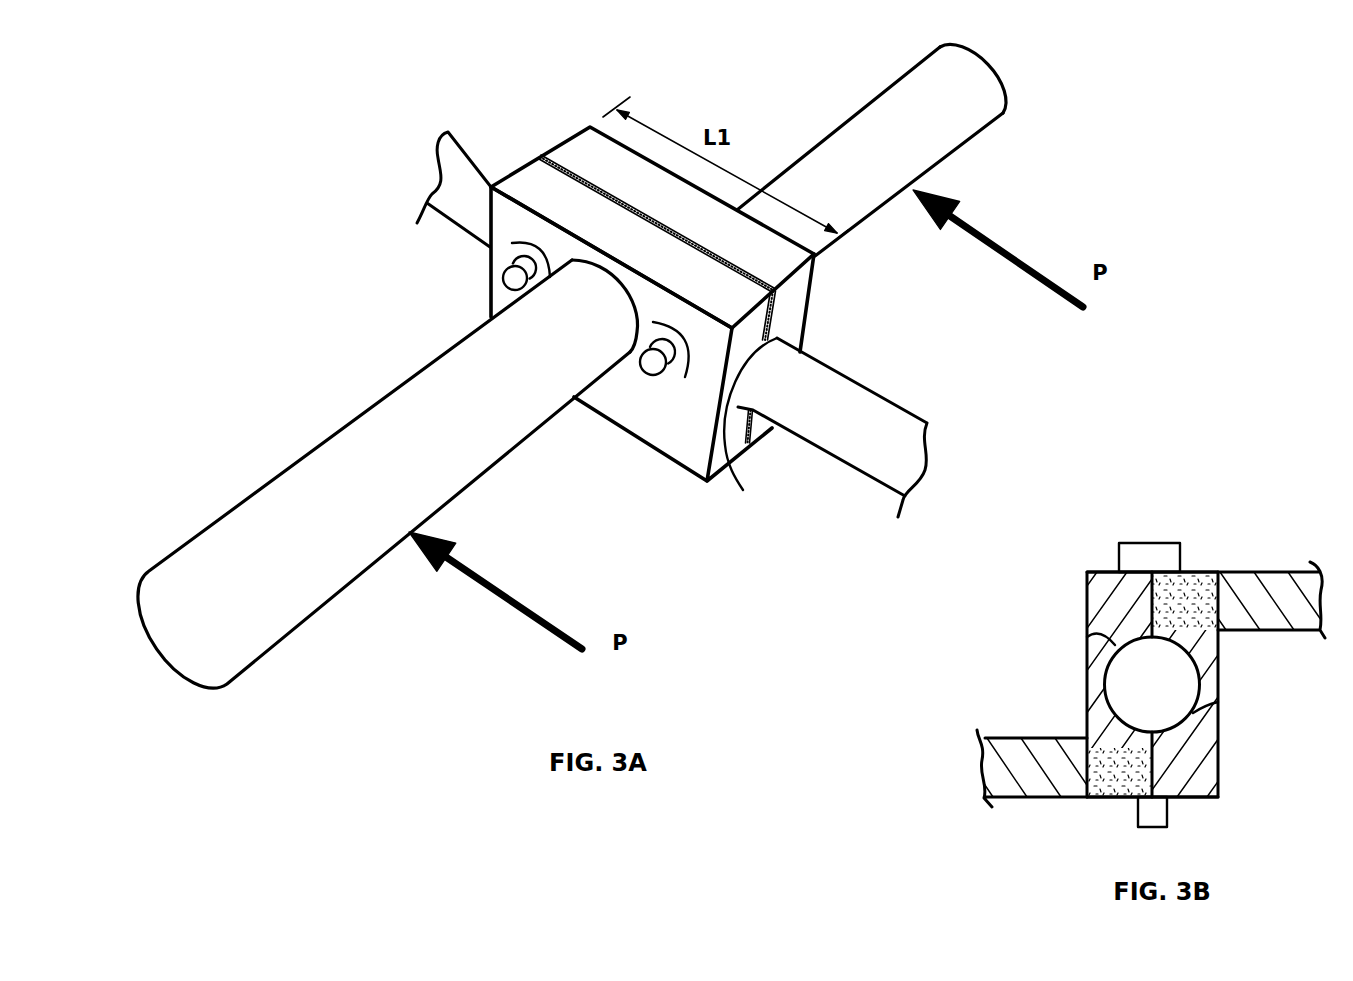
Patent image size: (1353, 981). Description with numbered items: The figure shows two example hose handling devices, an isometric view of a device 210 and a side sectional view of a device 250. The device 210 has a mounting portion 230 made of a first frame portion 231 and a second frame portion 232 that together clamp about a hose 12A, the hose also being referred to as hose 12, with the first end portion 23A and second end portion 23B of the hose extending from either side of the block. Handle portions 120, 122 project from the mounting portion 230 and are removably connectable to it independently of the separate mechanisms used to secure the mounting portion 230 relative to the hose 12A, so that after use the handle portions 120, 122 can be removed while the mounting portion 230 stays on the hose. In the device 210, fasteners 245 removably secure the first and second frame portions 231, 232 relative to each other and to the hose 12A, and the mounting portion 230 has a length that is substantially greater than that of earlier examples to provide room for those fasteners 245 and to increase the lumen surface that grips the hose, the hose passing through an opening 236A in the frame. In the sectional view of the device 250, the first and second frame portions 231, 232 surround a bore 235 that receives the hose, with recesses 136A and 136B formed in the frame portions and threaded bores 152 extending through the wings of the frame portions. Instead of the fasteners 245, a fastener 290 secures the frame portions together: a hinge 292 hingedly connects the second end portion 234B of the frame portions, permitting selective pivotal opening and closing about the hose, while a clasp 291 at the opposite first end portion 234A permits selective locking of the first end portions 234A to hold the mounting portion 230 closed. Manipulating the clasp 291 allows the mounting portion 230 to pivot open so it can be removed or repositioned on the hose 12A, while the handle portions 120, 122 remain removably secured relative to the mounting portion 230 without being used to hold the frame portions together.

In FIG. 3A, the hose 12 is at (493, 162).
In FIG. 3A, the hose 12A is at (898, 404).
In FIG. 3A, the first end portion of shaft 23A is at (566, 320).
In FIG. 3B, the first end portion of shaft 23A is at (1243, 633).
In FIG. 3A, the second end portion of shaft 23B is at (182, 548).
In FIG. 3A, the handle portion 120 is at (260, 662).
In FIG. 3B, the handle portion 120 is at (1003, 735).
In FIG. 3A, the handle portion 122 is at (985, 125).
In FIG. 3B, the handle portion 122 is at (1253, 567).
In FIG. 3B, the first slot 136A is at (1087, 640).
In FIG. 3B, the second slot 136B is at (1218, 702).
In FIG. 3B, the threaded bore 152 is at (1207, 587).
In FIG. 3A, the device 210 is at (352, 290).
In FIG. 3A, the mounting portion 230 is at (555, 146).
In FIG. 3B, the mounting portion 230 is at (1083, 590).
In FIG. 3A, the first frame portion 231 is at (633, 398).
In FIG. 3B, the first frame portion 231 is at (1083, 627).
In FIG. 3A, the second frame portion 232 is at (790, 313).
In FIG. 3B, the second frame portion 232 is at (1223, 758).
In FIG. 3B, the first end portion 234A is at (1098, 572).
In FIG. 3B, the second end portion 234B is at (1193, 800).
In FIG. 3B, the bore 235 is at (1133, 695).
In FIG. 3A, the bore opening 236A is at (751, 427).
In FIG. 3A, the fasteners 245 is at (512, 283).
In FIG. 3B, the device 250 is at (1000, 627).
In FIG. 3B, the fastener 290 is at (1117, 542).
In FIG. 3B, the clasp 291 is at (1173, 543).
In FIG. 3B, the hinge 292 is at (1153, 827).